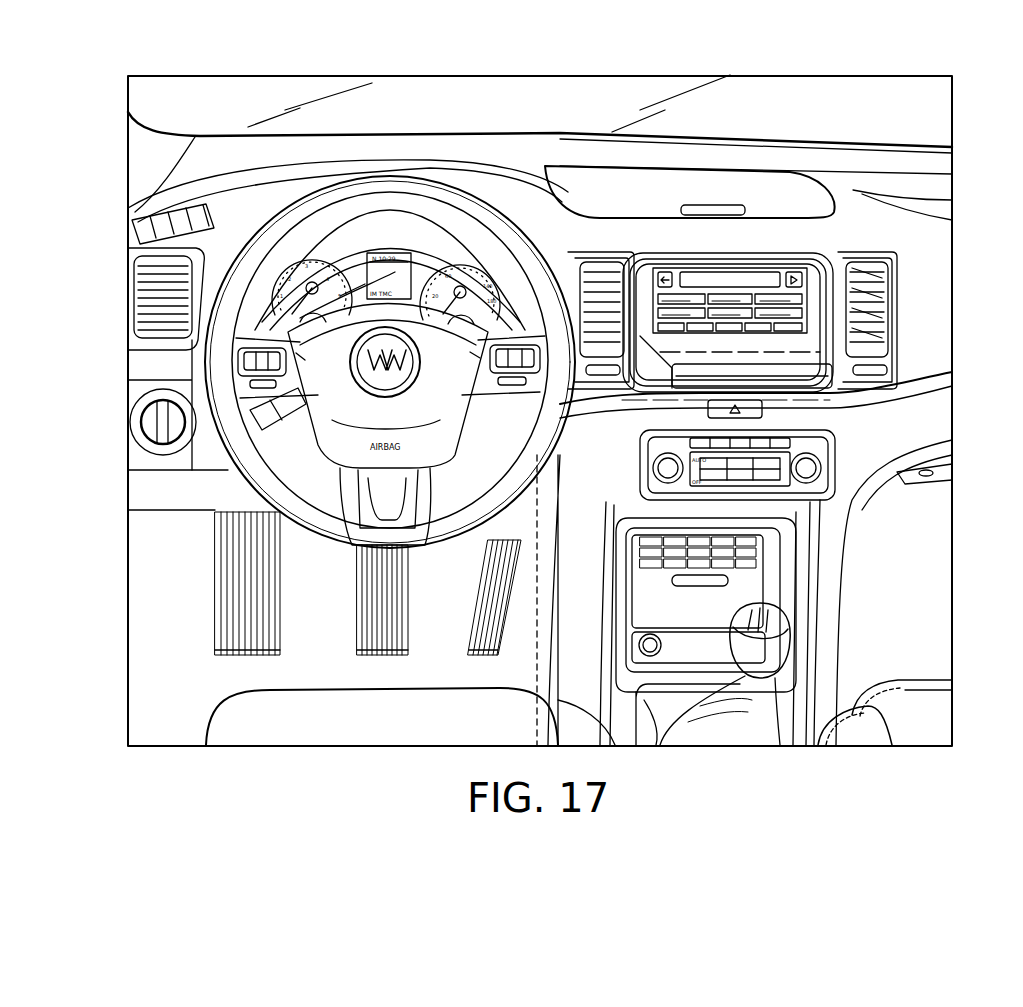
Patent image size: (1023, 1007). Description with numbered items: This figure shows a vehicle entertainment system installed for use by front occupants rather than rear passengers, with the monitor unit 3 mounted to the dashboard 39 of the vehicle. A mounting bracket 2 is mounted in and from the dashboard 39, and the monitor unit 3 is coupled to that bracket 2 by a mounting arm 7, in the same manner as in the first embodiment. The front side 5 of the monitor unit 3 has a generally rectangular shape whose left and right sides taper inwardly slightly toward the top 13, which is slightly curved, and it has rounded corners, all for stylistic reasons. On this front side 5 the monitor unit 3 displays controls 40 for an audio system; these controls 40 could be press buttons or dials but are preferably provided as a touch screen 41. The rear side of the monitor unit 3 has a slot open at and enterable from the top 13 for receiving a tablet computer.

The mounting bracket 2 is at (834, 390).
The monitor unit 3 is at (850, 330).
The front side 5 is at (731, 217).
The mounting arm 7 is at (648, 375).
The top 13 is at (730, 264).
The dashboard 39 is at (928, 240).
The controls 40 is at (745, 296).
The touch screen 41 is at (666, 273).